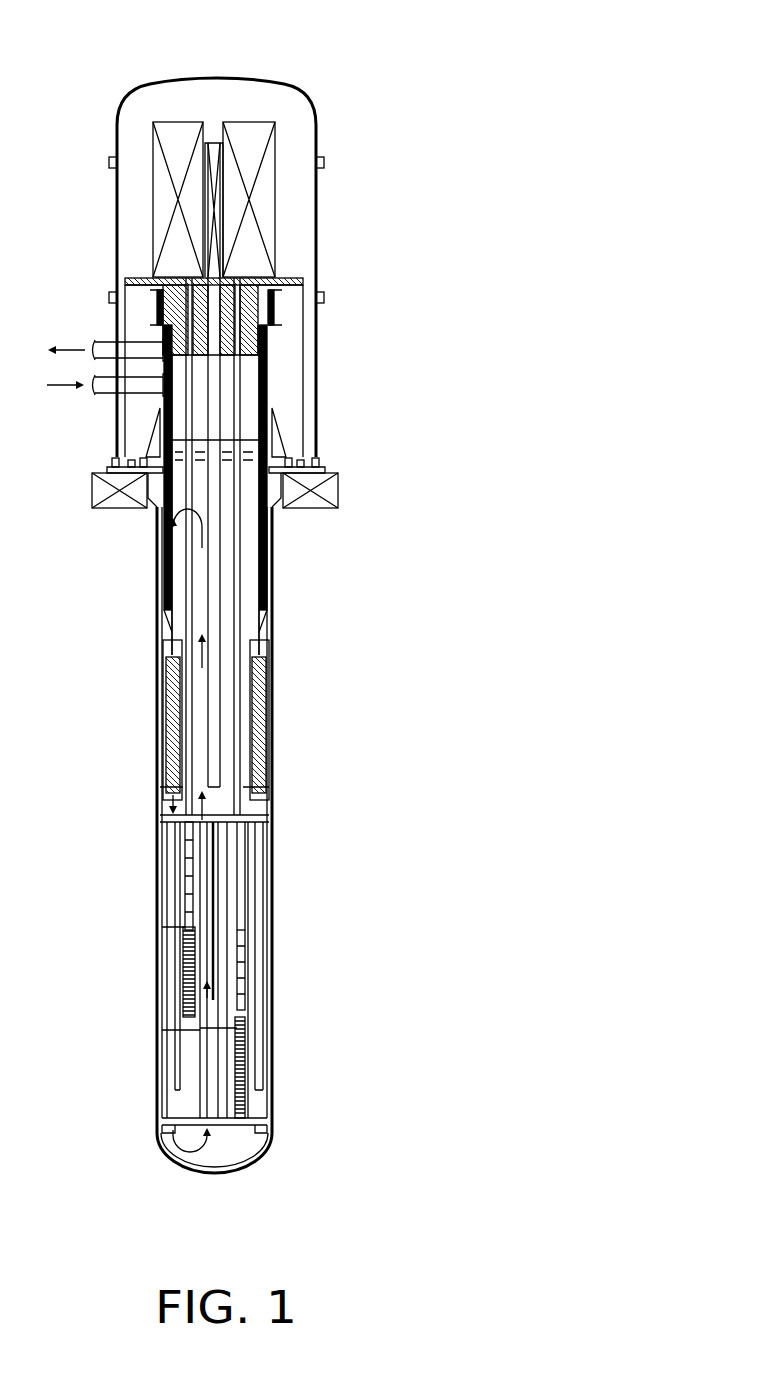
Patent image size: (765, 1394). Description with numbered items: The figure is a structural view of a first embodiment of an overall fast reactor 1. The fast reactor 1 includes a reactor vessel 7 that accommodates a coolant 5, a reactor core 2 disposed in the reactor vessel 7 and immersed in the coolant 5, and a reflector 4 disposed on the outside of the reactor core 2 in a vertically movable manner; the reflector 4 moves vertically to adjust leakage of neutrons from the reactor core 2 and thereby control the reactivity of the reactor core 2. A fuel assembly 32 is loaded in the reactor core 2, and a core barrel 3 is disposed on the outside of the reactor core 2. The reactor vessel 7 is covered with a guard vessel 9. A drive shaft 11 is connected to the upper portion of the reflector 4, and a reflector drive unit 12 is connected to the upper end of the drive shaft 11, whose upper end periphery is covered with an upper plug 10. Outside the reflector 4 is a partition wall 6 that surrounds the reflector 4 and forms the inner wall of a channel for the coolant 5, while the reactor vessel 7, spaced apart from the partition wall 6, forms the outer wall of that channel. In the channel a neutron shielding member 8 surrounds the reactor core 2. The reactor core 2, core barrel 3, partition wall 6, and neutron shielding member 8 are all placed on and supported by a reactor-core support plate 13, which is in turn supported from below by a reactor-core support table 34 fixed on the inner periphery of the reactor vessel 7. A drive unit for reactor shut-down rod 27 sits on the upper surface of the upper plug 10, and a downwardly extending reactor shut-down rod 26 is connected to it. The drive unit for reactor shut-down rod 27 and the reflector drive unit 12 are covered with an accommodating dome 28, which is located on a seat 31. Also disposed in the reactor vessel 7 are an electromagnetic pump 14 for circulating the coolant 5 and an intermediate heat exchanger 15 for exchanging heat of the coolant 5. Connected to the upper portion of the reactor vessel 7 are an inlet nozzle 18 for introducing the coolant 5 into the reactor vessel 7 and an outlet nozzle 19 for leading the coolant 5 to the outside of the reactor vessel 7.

The fast reactor 1 is at (487, 59).
The reactor core 2 is at (232, 968).
The core barrel 3 is at (237, 862).
The reflector 4 is at (190, 970).
The coolant 5 is at (260, 800).
The partition wall 6 is at (250, 812).
The reactor vessel 7 is at (250, 1168).
The neutron shielding member 8 is at (258, 908).
The guard vessel 9 is at (158, 1062).
The upper plug 10 is at (248, 353).
The drive shaft 11 is at (192, 707).
The reflector drive unit 12 is at (275, 221).
The reactor-core support plate 13 is at (238, 1125).
The electromagnetic pump 14 is at (262, 740).
The intermediate heat exchanger 15 is at (262, 580).
The inlet nozzle 18 is at (108, 397).
The outlet nozzle 19 is at (108, 340).
The reactor shut-down rod 26 is at (212, 903).
The drive unit for reactor shut-down rod 27 is at (209, 141).
The accommodating dome 28 is at (272, 88).
The seat 31 is at (338, 490).
The fuel assembly 32 is at (232, 993).
The reactor-core support table 34 is at (265, 1135).